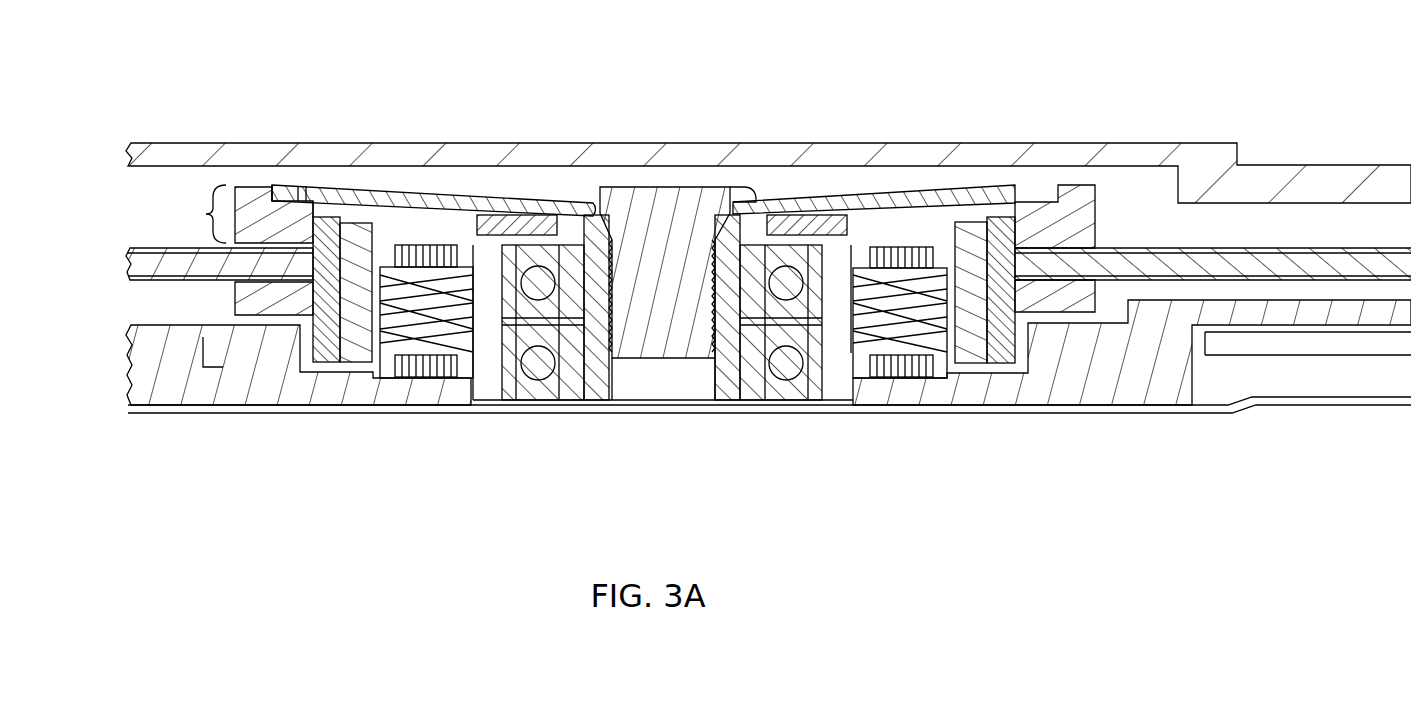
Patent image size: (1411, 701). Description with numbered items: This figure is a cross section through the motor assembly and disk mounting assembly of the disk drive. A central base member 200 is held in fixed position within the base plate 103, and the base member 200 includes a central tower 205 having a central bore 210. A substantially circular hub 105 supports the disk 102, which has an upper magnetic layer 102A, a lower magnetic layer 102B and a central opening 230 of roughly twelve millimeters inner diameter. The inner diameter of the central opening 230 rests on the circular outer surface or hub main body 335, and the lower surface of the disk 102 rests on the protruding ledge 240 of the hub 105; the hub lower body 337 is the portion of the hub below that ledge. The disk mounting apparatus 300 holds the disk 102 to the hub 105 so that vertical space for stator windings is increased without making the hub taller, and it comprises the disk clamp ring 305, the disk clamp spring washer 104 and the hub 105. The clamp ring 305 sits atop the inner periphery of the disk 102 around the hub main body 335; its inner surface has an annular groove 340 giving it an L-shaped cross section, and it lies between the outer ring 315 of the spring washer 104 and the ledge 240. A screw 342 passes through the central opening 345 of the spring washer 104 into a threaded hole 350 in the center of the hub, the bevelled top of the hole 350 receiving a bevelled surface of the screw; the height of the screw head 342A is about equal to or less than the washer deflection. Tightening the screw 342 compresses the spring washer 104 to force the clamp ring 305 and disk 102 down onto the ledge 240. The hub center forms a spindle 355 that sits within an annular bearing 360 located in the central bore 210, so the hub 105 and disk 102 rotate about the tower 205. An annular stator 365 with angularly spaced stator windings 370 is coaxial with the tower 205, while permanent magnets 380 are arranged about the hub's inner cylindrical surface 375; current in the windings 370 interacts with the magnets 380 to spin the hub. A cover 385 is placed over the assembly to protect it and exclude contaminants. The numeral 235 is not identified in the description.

The disk 102 is at (134, 264).
The upper magnetic layer 102A is at (157, 247).
The lower magnetic layer 102B is at (170, 279).
The base plate 103 is at (149, 403).
The disk clamp spring washer 104 is at (422, 163).
The hub 105 is at (236, 300).
The base member 200 is at (241, 403).
The central tower 205 is at (490, 370).
The central bore 210 is at (823, 247).
The central opening 230 is at (274, 203).
The seal 235 is at (324, 222).
The protruding ledge 240 is at (274, 300).
The disk mounting apparatus 300 is at (203, 215).
The disk clamp ring 305 is at (246, 190).
The outer ring 315 is at (286, 187).
The hub main body 335 is at (298, 187).
The hub lower body 337 is at (320, 352).
The annular groove 340 is at (306, 195).
The screw 342 is at (687, 187).
The screw head 342A is at (768, 196).
The central opening 345 is at (563, 212).
The threaded hole 350 is at (710, 297).
The spindle 355 is at (598, 345).
The annular bearing 360 is at (575, 365).
The annular stator 365 is at (488, 327).
The stator windings 370 is at (441, 367).
The inner cylindrical surface 375 is at (340, 332).
The permanent magnets 380 is at (379, 365).
The cover 385 is at (908, 152).